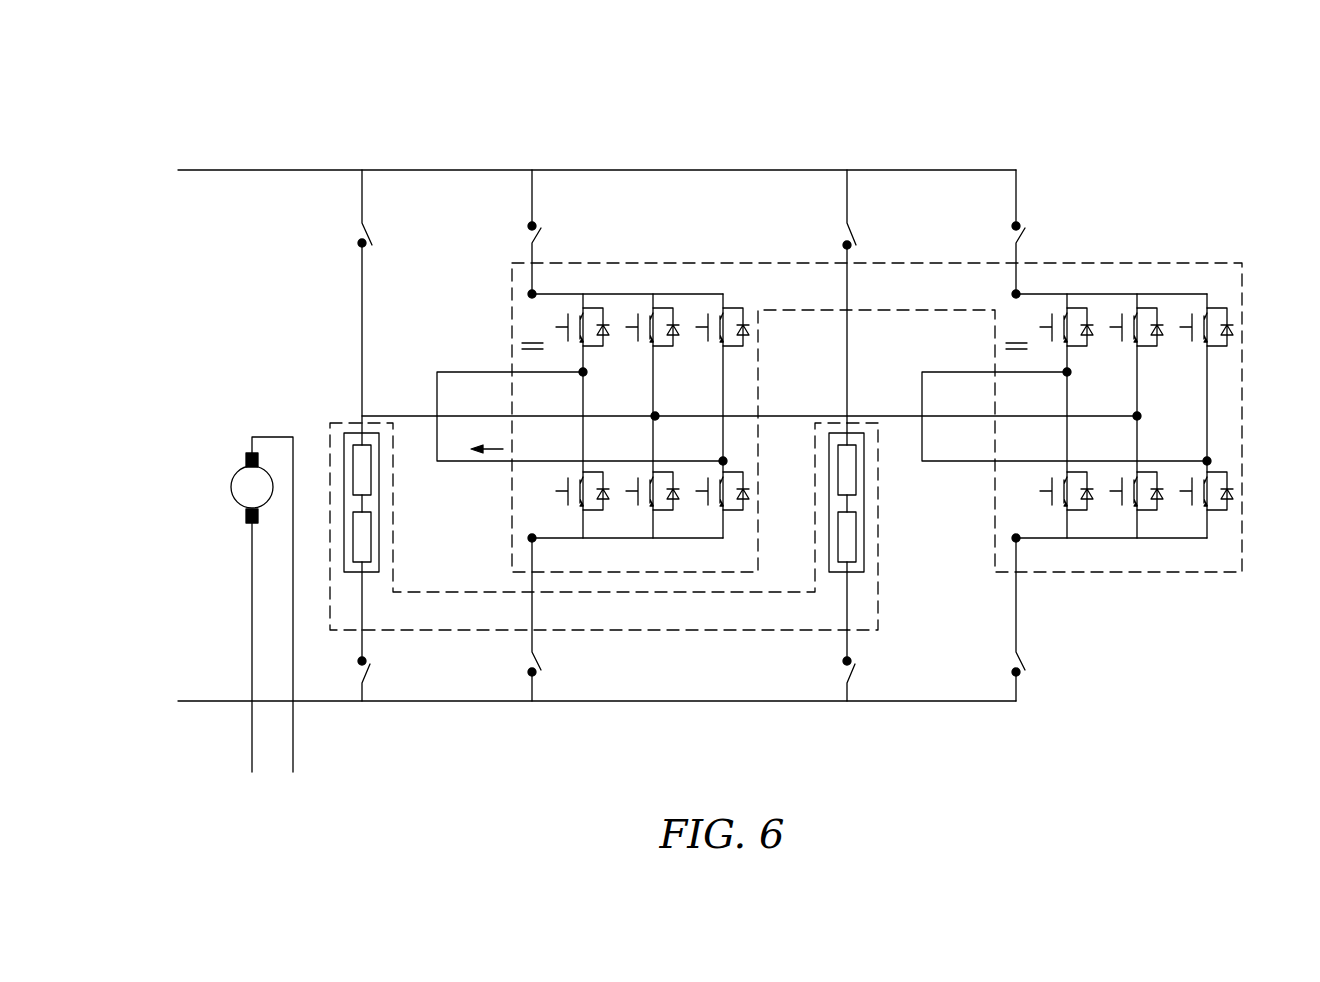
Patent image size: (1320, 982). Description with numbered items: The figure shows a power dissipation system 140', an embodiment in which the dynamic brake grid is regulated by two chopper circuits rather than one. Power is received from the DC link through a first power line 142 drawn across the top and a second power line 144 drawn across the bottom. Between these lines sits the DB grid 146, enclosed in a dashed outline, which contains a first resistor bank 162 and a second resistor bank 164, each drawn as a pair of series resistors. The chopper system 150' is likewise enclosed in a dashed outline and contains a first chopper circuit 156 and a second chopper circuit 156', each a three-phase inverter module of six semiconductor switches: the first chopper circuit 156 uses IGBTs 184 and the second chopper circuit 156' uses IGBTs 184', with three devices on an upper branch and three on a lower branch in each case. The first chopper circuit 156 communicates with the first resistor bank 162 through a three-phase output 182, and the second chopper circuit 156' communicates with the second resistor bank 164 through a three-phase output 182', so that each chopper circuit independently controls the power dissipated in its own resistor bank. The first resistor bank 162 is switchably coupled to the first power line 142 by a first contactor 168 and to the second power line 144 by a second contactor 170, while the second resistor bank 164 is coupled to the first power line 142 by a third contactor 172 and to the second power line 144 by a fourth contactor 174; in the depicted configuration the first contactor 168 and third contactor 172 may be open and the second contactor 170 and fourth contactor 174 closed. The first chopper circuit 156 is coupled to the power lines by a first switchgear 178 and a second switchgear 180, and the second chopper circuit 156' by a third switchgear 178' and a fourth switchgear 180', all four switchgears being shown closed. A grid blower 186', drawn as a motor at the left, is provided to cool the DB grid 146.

The power dissipation system 140' is at (1128, 64).
The first power line 142 is at (237, 170).
The second power line 144 is at (242, 689).
The dynamic brake grid 146 is at (878, 590).
The chopper system 150' is at (881, 378).
The first chopper circuit 156 is at (1106, 372).
The second chopper circuit 156' is at (622, 372).
The first resistor bank 162 is at (865, 527).
The second resistor bank 164 is at (380, 527).
The first contactor 168 is at (858, 233).
The second contactor 170 is at (857, 672).
The third contactor 172 is at (375, 232).
The fourth contactor 174 is at (372, 672).
The first switchgear 178 is at (1047, 232).
The third switchgear 178' is at (568, 232).
The second switchgear 180 is at (1046, 619).
The fourth switchgear 180' is at (566, 619).
The three-phase output 182 is at (1063, 417).
The three-phase output 182' is at (749, 417).
The insulated gate bipolar transistors 184 is at (1137, 416).
The insulated gate bipolar transistors 184' is at (655, 417).
The grid blower 186' is at (235, 598).